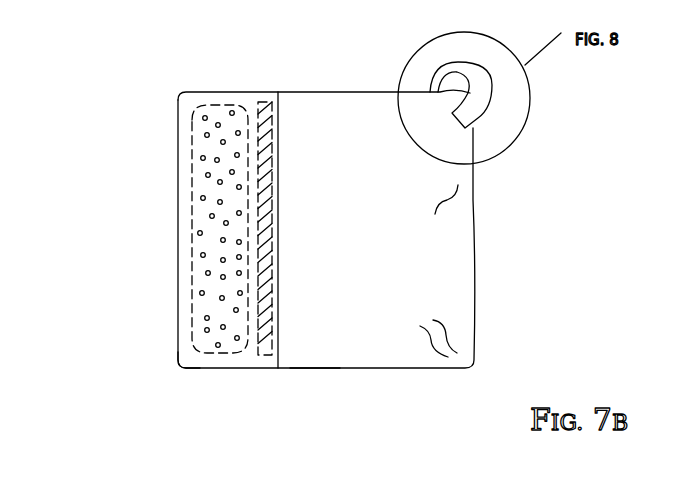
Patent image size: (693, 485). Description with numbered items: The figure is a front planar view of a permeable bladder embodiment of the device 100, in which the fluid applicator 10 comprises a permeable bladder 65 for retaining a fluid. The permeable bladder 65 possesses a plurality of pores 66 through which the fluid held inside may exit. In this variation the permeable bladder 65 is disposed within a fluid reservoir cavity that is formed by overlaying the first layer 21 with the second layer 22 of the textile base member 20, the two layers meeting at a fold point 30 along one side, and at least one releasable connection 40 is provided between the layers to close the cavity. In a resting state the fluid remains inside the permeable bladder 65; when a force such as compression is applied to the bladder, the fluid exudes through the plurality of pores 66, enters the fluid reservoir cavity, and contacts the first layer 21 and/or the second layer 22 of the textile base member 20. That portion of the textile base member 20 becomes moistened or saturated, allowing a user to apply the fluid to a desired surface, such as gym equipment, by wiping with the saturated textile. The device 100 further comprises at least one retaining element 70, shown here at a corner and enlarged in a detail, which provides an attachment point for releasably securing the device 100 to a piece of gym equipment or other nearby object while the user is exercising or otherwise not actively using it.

The device 100 is at (132, 88).
The fluid applicator 10 is at (181, 229).
The textile base member 20 is at (440, 283).
The first layer 21 is at (318, 362).
The second layer 22 is at (180, 365).
The fold point 30 is at (179, 315).
The releasable connection 40 is at (267, 358).
The permeable bladder 65 is at (197, 168).
The pores 66 is at (212, 216).
The retaining element 70 is at (478, 70).